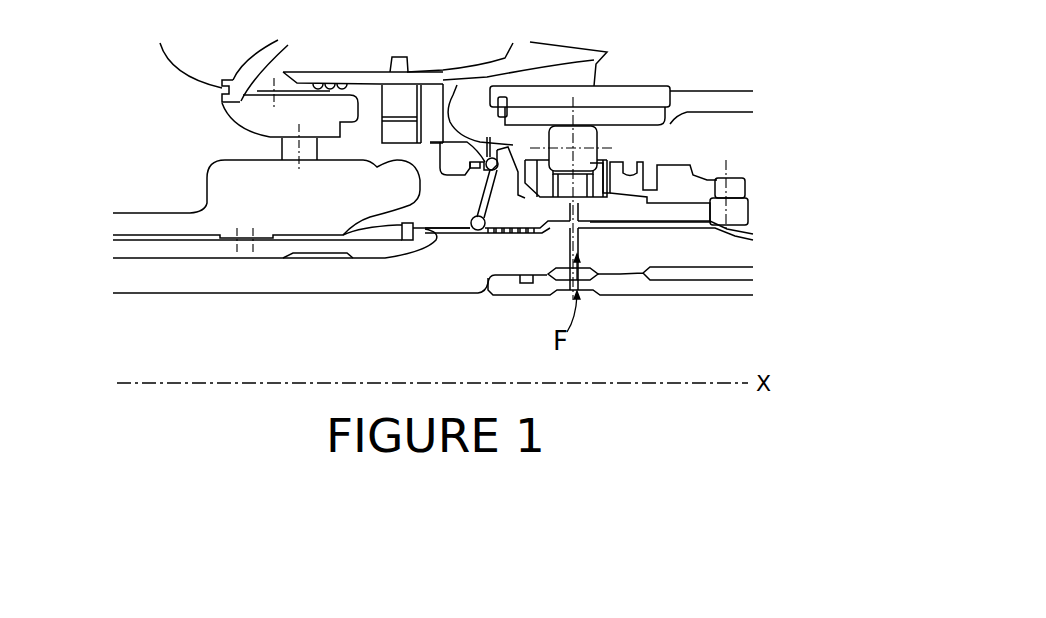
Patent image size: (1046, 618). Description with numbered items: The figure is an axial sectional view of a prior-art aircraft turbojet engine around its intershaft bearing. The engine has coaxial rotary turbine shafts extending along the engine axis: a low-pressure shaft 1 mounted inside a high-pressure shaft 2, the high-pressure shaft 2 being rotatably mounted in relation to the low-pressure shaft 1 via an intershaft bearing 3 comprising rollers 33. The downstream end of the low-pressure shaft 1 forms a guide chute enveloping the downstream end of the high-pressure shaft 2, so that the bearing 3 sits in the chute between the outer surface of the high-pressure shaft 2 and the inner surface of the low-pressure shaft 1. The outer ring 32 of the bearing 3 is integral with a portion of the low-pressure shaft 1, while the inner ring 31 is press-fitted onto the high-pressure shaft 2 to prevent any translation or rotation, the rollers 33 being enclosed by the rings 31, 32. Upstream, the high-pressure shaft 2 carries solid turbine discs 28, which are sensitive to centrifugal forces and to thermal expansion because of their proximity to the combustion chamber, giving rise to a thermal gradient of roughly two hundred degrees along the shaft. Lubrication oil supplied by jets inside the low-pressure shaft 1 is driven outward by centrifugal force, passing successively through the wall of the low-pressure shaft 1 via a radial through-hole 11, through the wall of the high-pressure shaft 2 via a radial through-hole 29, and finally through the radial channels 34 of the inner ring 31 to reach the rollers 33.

The low-pressure shaft 1 is at (706, 92).
The high-pressure shaft 2 is at (377, 167).
The intershaft bearing 3 is at (520, 135).
The radial through-hole 11 is at (587, 262).
The solid turbine discs 28 is at (180, 183).
The radial through-hole 29 is at (578, 210).
The inner ring 31 is at (633, 187).
The outer ring 32 is at (627, 117).
The rollers 33 is at (587, 137).
The radial channels 34 is at (590, 183).